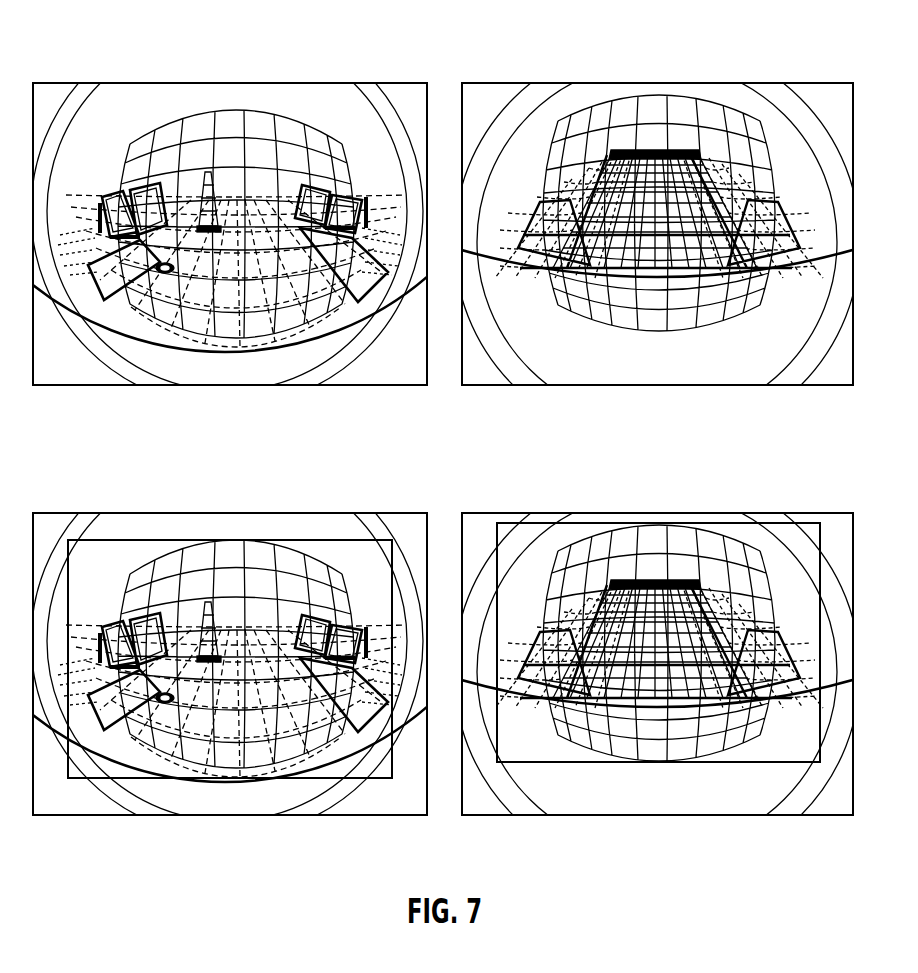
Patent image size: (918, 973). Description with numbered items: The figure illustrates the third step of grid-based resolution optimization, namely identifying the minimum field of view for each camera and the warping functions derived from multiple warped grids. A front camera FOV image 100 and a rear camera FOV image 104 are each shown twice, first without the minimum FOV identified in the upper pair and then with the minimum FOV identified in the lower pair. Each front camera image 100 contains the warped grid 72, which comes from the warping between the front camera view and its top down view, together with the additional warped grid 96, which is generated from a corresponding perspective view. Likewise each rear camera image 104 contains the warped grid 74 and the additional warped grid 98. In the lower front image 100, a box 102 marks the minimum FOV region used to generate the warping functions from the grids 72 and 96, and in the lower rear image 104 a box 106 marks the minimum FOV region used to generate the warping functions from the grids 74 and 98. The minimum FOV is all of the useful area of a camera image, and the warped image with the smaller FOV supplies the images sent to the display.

The warped grid 72 is at (90, 230).
The warped grid 74 is at (790, 193).
The additional warped grid 96 is at (203, 112).
The additional warped grid 98 is at (698, 97).
The front camera FOV image 100 is at (100, 83).
The box 102 is at (317, 538).
The rear camera FOV image 104 is at (788, 83).
The box 106 is at (588, 523).